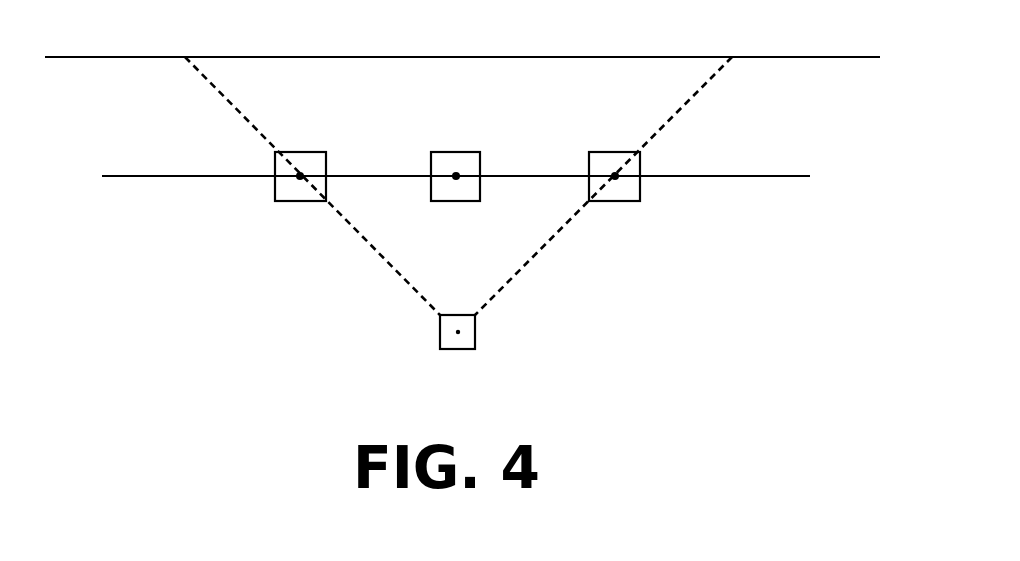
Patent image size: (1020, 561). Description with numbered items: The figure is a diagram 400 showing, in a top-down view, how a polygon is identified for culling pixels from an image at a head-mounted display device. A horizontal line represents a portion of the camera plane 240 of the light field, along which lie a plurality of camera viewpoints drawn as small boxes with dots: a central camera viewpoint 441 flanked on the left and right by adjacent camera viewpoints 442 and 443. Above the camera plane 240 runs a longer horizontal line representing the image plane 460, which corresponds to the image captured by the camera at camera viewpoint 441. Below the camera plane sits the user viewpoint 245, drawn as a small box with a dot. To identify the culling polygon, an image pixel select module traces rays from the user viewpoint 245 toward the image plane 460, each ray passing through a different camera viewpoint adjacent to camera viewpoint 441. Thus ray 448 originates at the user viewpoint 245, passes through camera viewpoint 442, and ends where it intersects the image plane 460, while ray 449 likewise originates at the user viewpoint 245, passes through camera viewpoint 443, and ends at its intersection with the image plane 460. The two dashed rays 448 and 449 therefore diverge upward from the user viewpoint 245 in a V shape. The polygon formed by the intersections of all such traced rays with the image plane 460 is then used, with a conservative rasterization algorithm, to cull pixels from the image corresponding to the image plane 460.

The diagram 400 is at (70, 338).
The image plane 460 is at (632, 57).
The camera plane 240 is at (112, 176).
The camera viewpoint 441 is at (455, 152).
The camera viewpoint 442 is at (298, 152).
The camera viewpoint 443 is at (610, 152).
The ray 448 is at (352, 232).
The ray 449 is at (563, 230).
The user viewpoint 245 is at (440, 337).